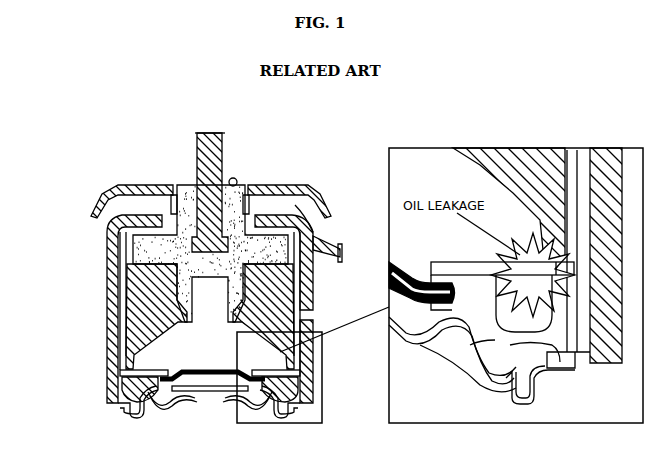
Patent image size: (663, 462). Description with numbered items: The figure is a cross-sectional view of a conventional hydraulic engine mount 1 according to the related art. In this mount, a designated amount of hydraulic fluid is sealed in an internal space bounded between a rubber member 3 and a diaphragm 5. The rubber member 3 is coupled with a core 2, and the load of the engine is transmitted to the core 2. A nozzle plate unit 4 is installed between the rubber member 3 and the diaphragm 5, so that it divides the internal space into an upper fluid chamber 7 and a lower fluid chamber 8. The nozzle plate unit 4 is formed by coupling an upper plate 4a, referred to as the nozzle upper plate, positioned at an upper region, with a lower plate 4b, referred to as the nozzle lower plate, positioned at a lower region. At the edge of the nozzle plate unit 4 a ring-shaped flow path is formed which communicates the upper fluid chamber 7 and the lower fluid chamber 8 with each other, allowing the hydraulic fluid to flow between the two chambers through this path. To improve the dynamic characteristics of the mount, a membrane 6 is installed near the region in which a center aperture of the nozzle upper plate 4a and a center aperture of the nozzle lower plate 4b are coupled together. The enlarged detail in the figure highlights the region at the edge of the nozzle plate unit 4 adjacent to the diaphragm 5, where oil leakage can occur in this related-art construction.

The engine mount 1 is at (284, 184).
The core 2 is at (183, 205).
The rubber member 3 is at (138, 322).
The nozzle plate unit 4 is at (30, 350).
The upper plate 4a is at (130, 359).
The lower plate 4b is at (128, 385).
The diaphragm 5 is at (200, 394).
The membrane 6 is at (170, 390).
The upper fluid chamber 7 is at (213, 349).
The lower fluid chamber 8 is at (218, 381).